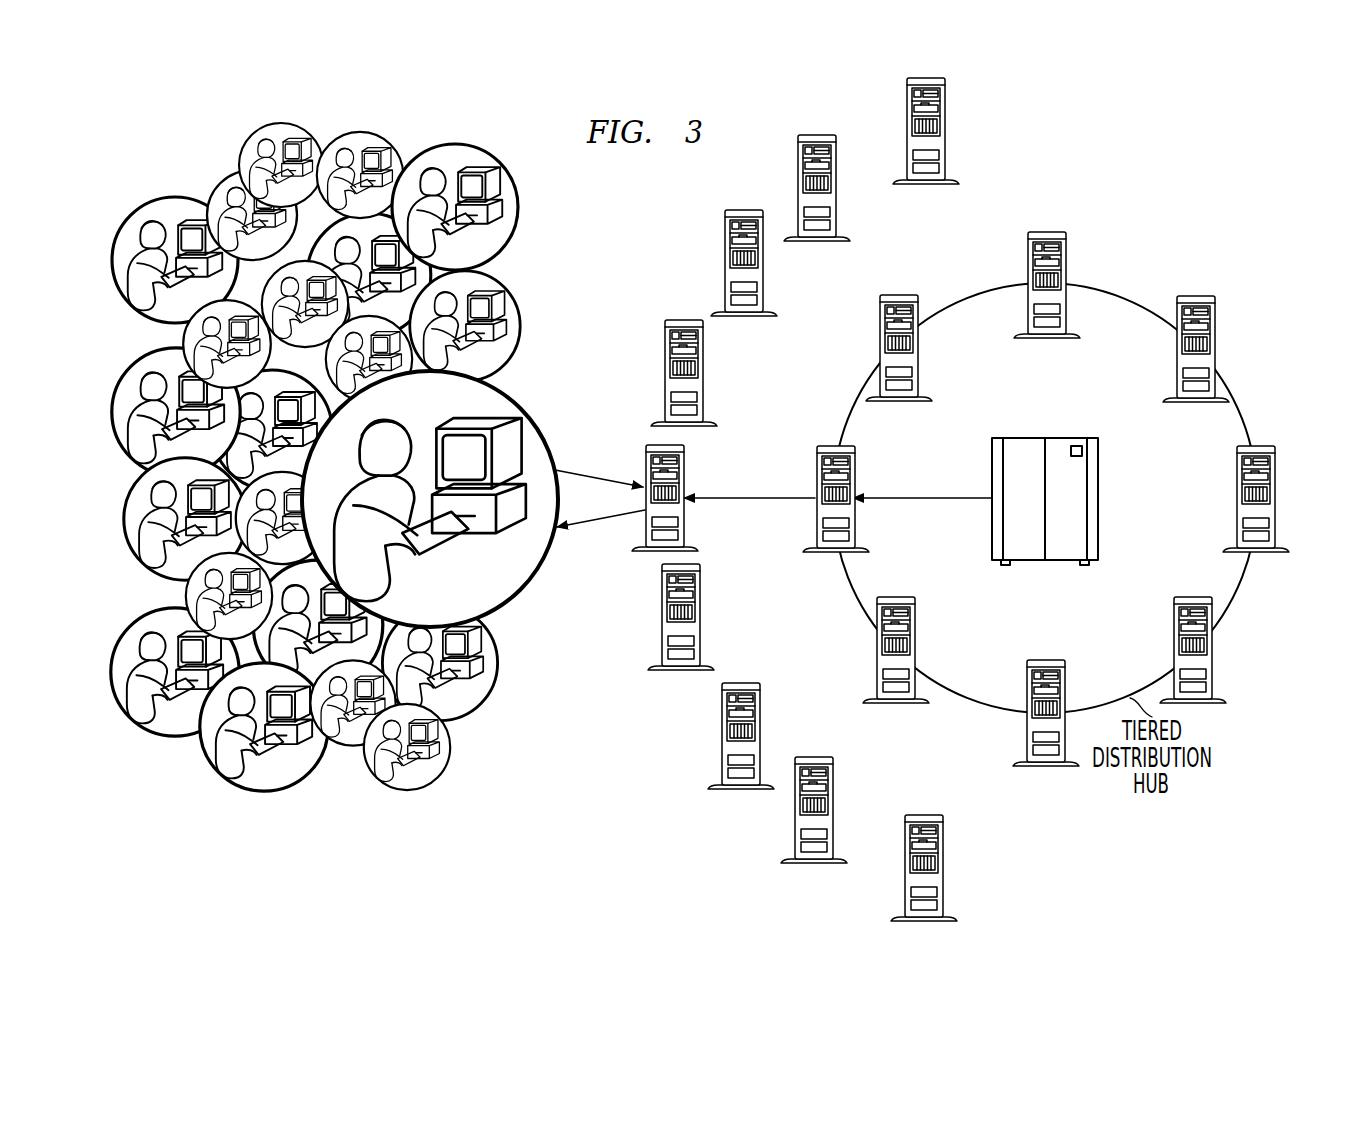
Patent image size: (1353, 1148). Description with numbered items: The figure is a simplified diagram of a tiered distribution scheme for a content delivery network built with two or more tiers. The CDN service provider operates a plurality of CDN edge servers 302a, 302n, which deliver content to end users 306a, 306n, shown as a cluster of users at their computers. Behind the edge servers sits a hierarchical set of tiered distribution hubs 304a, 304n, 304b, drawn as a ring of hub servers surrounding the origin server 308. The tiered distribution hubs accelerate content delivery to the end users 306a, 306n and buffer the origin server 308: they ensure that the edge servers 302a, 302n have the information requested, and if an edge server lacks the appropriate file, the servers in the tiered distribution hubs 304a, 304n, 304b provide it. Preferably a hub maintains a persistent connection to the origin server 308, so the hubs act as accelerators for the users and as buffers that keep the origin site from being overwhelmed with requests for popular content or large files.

The CDN edge server 302a is at (945, 130).
The CDN edge server 302n is at (942, 870).
The tiered distribution hub 304a is at (1045, 232).
The tiered distribution hub 304n is at (895, 295).
The tiered distribution hub 304b is at (1193, 296).
The end user 306a is at (250, 790).
The end user 306n is at (482, 700).
The origin server 308 is at (1058, 438).